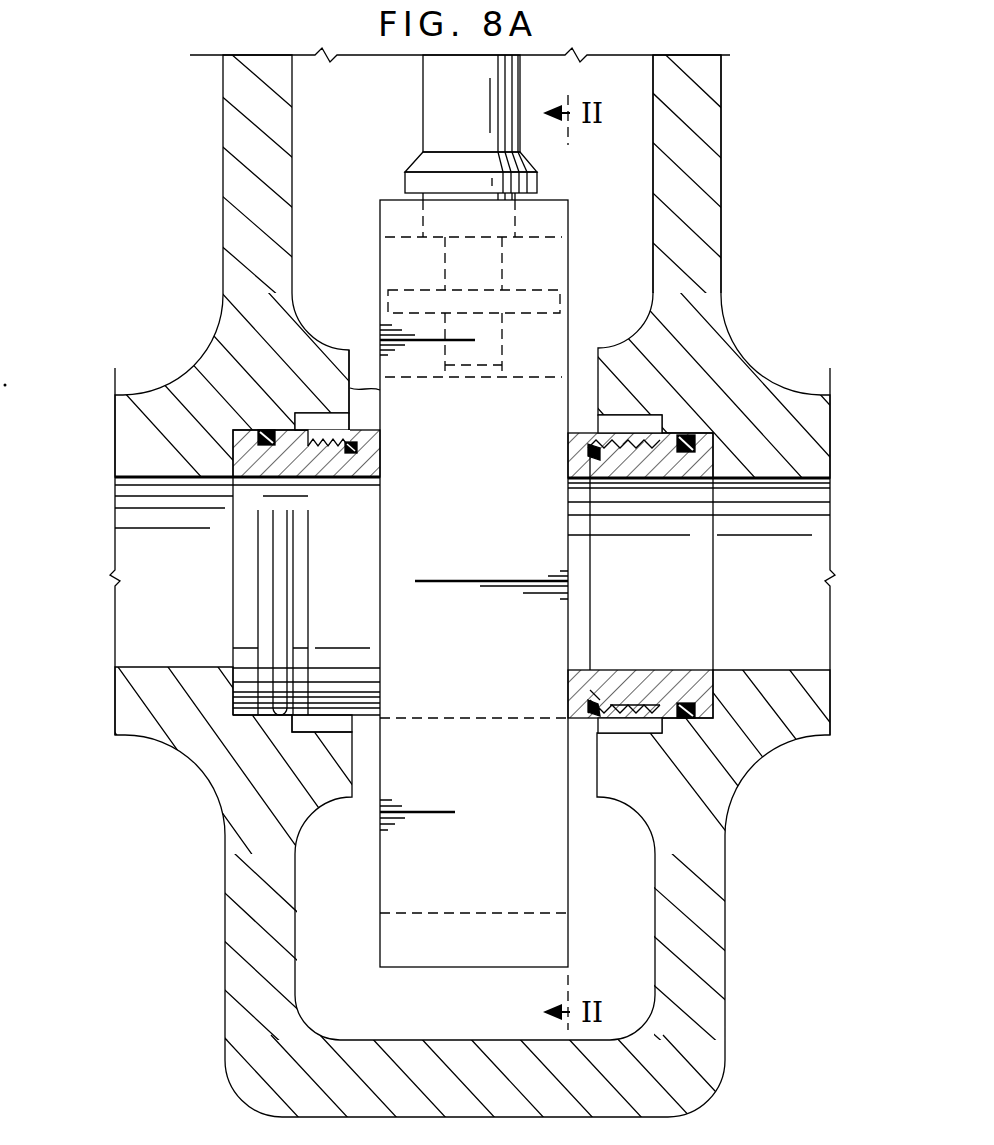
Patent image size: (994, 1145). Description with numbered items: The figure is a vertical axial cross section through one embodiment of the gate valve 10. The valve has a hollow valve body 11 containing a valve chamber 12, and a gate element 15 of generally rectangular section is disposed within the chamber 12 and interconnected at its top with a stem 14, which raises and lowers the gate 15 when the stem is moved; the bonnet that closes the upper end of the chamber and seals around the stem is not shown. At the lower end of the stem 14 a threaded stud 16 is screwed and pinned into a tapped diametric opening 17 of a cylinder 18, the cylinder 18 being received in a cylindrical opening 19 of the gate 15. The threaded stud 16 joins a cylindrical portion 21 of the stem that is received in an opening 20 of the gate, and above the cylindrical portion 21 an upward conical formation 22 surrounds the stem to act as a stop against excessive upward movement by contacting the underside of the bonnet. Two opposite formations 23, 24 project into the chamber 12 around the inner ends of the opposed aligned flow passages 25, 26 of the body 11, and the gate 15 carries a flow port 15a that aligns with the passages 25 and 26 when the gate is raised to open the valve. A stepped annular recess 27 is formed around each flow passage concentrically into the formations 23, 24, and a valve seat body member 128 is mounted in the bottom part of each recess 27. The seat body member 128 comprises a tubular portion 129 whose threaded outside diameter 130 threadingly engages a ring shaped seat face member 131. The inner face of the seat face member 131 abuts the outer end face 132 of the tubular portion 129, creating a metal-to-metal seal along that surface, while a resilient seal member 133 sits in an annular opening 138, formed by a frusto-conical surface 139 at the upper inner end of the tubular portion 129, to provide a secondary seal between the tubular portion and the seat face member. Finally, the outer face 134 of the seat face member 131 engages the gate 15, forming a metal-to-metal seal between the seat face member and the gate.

The gate valve 10 is at (730, 117).
The valve body 11 is at (722, 264).
The valve chamber 12 is at (653, 165).
The stem 14 is at (423, 80).
The gate element 15 is at (568, 232).
The flow port 15a is at (458, 718).
The threaded stud 16 is at (508, 323).
The tapped diametric opening 17 is at (445, 262).
The cylinder 18 is at (380, 278).
The cylindrical opening 19 is at (543, 237).
The opening 20 is at (515, 215).
The cylindrical portion 21 is at (422, 195).
The upward conical formation 22 is at (420, 158).
The formation 23 is at (380, 390).
The formation 24 is at (568, 355).
The flow passage 25 is at (142, 667).
The flow passage 26 is at (800, 668).
The stepped annular recess 27 is at (600, 420).
The valve seat body member 128 is at (730, 685).
The tubular portion 129 is at (594, 700).
The threaded outside diameter 130 is at (638, 706).
The ring shaped seat face member 131 is at (598, 430).
The outer end face 132 is at (595, 470).
The resilient seal member 133 is at (596, 445).
The outer face 134 is at (595, 455).
The annular opening 138 is at (594, 708).
The frusto-conical surface 139 is at (594, 704).